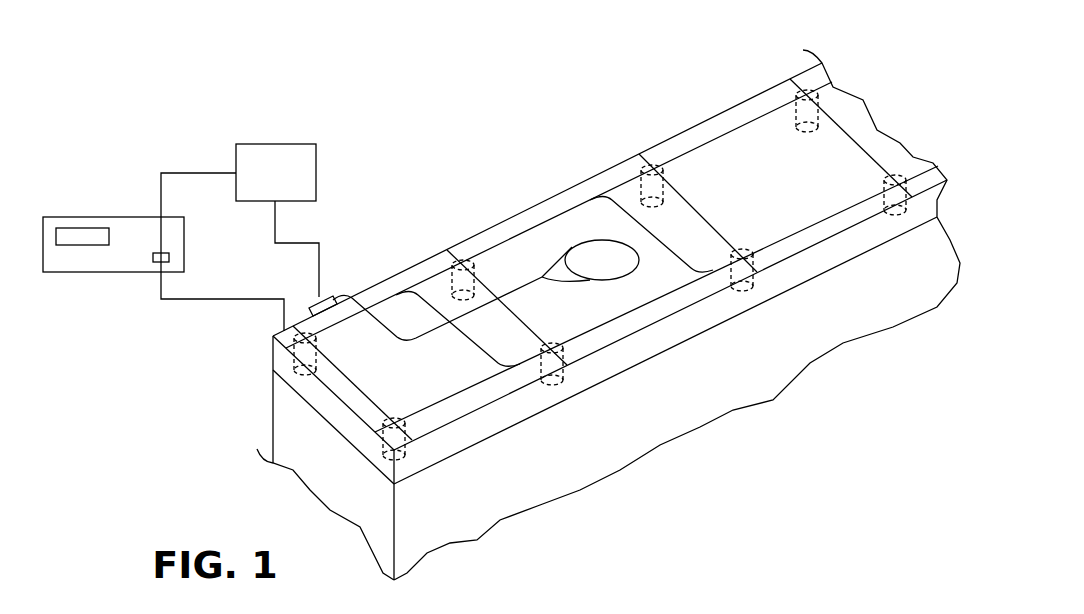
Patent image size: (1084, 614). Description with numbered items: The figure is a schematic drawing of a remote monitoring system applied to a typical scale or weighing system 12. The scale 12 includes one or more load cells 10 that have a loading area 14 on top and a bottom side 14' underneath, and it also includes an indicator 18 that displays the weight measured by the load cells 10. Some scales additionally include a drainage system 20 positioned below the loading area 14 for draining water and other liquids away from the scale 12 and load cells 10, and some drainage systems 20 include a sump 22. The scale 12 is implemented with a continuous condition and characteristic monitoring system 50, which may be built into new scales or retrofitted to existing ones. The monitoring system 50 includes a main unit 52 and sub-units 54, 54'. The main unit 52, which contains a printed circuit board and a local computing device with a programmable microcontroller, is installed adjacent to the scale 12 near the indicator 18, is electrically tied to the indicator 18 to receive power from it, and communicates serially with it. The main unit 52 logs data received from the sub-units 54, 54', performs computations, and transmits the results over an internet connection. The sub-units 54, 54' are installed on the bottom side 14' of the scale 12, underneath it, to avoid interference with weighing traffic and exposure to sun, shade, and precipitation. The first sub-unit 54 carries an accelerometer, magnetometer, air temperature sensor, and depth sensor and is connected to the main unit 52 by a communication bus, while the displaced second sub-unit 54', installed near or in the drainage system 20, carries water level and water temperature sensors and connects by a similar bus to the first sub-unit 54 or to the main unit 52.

The load cell 10 is at (818, 240).
The scale or weighing system 12 is at (660, 82).
The loading area 14 is at (678, 220).
The bottom side 14' is at (665, 350).
The indicator 18 is at (89, 217).
The drainage system 20 is at (628, 293).
The sump 22 is at (588, 338).
The continuous condition and characteristic monitoring system 50 is at (348, 211).
The main unit 52 is at (276, 144).
The first sub-unit 54 is at (283, 270).
The second sub-unit 54' is at (486, 242).